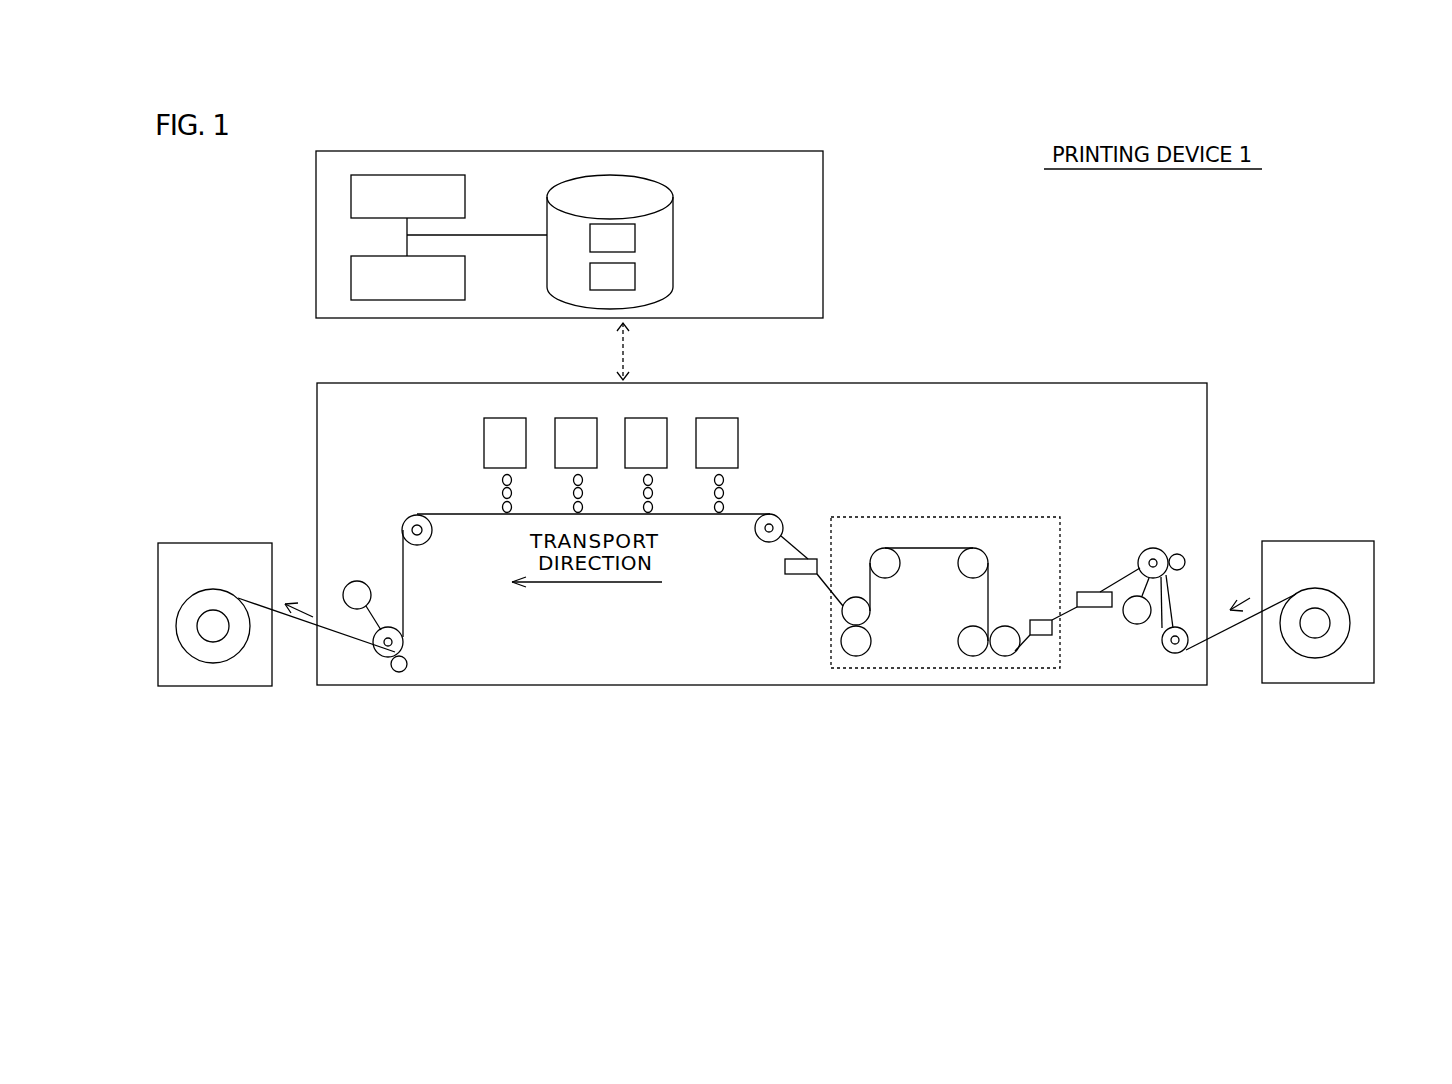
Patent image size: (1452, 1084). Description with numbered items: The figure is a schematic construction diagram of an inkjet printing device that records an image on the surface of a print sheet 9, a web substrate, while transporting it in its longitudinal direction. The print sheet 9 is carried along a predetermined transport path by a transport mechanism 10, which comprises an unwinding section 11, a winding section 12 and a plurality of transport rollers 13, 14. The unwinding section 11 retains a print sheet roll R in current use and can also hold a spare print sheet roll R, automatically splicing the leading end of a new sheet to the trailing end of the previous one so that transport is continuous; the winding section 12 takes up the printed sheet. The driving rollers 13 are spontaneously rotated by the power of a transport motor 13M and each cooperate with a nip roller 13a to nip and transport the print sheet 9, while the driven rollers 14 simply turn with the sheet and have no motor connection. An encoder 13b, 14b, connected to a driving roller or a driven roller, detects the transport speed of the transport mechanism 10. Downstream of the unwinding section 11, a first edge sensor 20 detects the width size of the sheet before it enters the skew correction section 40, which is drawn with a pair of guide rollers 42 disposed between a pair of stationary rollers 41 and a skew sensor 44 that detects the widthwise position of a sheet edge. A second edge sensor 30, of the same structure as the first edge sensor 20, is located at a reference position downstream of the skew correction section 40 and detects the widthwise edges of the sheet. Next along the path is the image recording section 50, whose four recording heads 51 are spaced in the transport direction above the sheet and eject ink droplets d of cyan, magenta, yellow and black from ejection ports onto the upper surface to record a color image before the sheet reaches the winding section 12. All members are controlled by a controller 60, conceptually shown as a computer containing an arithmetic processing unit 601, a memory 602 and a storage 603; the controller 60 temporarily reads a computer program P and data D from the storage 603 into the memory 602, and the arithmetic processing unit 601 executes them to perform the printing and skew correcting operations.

The print sheet 9 is at (1223, 633).
The transport mechanism 10 is at (991, 470).
The unwinding section 11 is at (1337, 584).
The winding section 12 is at (212, 543).
The driving roller 13 is at (403, 641).
The nip roller 13a is at (400, 672).
The encoder 13b is at (392, 652).
The transport motor 13M is at (361, 582).
The driven roller 14 is at (426, 540).
The encoder 14b is at (416, 516).
The first edge sensor 20 is at (1090, 592).
The second edge sensor 30 is at (785, 575).
The skew correction section 40 is at (945, 611).
The stationary roller 41 is at (856, 656).
The guide roller 42 is at (888, 578).
The skew sensor 44 is at (1036, 620).
The image recording section 50 is at (659, 453).
The recording head 51 is at (514, 418).
The ink droplet d is at (512, 503).
The controller 60 is at (846, 215).
The arithmetic processing unit 601 is at (408, 196).
The memory 602 is at (408, 278).
The storage 603 is at (668, 293).
The computer program P is at (635, 239).
The data D is at (635, 276).
The print sheet roll R is at (1340, 608).